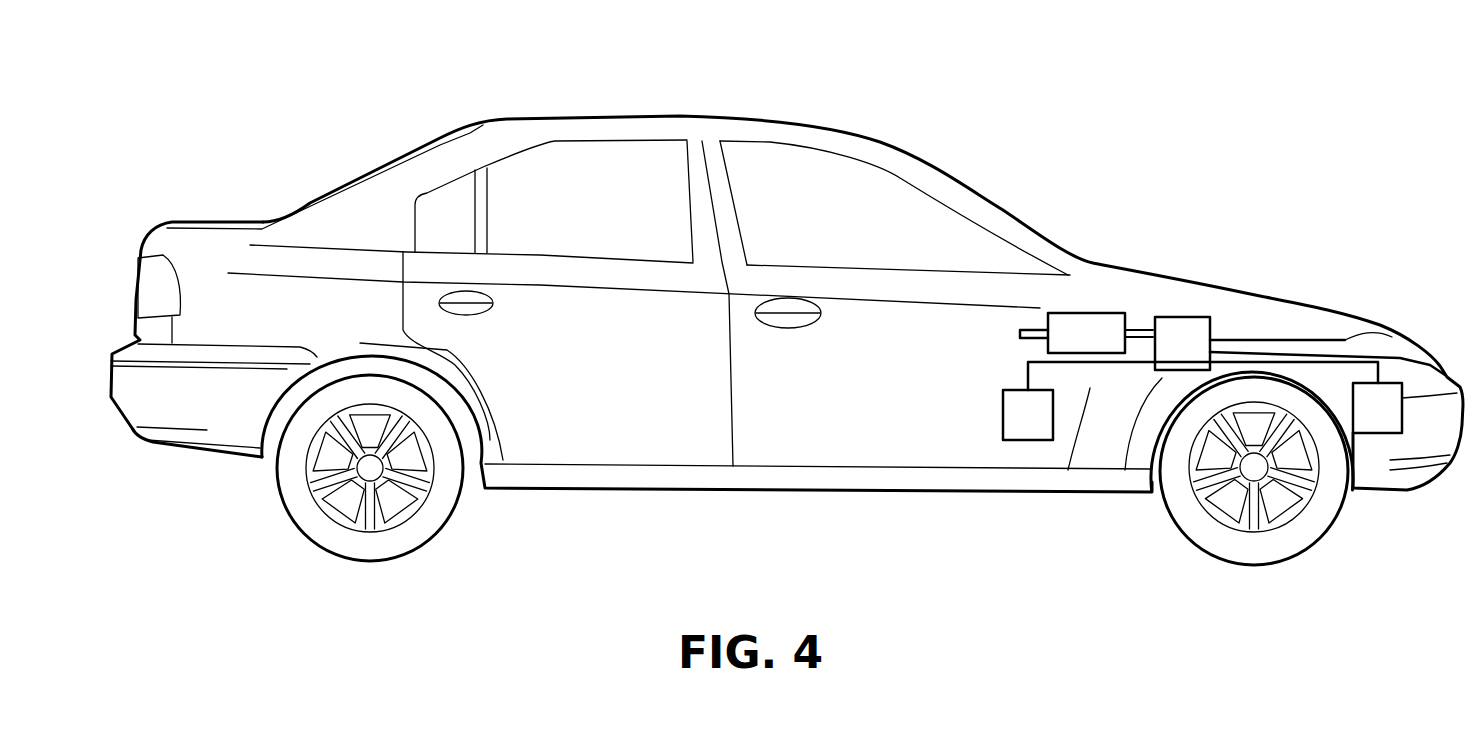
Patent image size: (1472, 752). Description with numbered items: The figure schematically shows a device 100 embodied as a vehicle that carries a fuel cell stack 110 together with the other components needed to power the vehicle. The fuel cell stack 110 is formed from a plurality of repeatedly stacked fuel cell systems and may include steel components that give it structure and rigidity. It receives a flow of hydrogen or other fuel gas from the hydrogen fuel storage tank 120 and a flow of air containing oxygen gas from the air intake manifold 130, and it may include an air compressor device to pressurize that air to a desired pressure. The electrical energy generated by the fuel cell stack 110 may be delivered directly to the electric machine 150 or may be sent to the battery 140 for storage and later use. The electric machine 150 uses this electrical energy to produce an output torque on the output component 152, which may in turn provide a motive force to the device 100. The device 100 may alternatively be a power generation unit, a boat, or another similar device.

The device 100 is at (611, 117).
The fuel cell stack 110 is at (1178, 330).
The hydrogen fuel storage tank 120 is at (1373, 417).
The air intake manifold 130 is at (1313, 340).
The battery 140 is at (1027, 422).
The electric machine 150 is at (1078, 330).
The output component 152 is at (1042, 330).